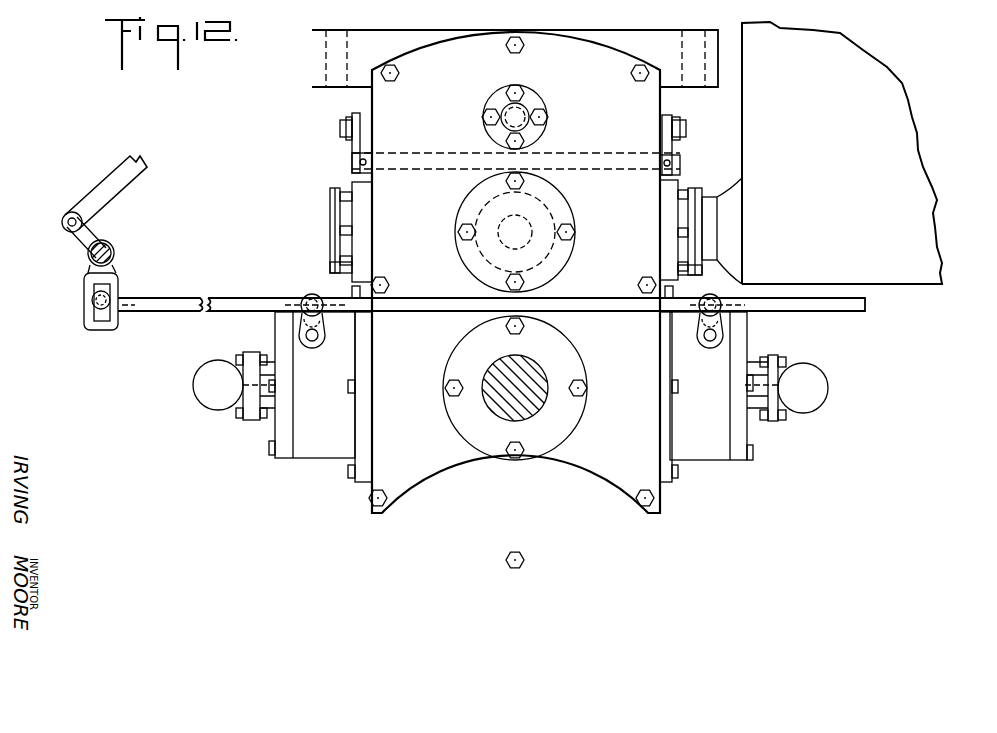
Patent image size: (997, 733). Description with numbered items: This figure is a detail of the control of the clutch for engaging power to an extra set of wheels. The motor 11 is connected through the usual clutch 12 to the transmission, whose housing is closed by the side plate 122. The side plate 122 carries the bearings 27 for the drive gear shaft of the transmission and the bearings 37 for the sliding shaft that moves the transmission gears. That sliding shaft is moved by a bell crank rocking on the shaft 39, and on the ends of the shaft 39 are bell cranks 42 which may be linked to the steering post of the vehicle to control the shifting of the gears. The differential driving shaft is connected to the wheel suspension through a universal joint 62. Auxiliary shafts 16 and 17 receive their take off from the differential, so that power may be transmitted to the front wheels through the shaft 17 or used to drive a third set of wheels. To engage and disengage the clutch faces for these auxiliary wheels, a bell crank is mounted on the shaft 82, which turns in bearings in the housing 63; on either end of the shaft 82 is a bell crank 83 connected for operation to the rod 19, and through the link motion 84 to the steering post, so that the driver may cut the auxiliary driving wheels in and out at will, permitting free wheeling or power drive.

The motor 11 is at (905, 130).
The clutch 12 is at (732, 218).
The auxiliary shaft 16 is at (246, 424).
The auxiliary shaft 17 is at (768, 428).
The rod 19 is at (165, 300).
The bearings 27 is at (555, 216).
The bearings 37 is at (503, 99).
The shaft 39 is at (588, 153).
The bell cranks 42 is at (340, 122).
The universal joint 62 is at (538, 400).
The housing 63 is at (310, 447).
The shaft 82 is at (321, 334).
The bell crank 83 is at (315, 347).
The link motion 84 is at (88, 267).
The side plate 122 is at (513, 300).